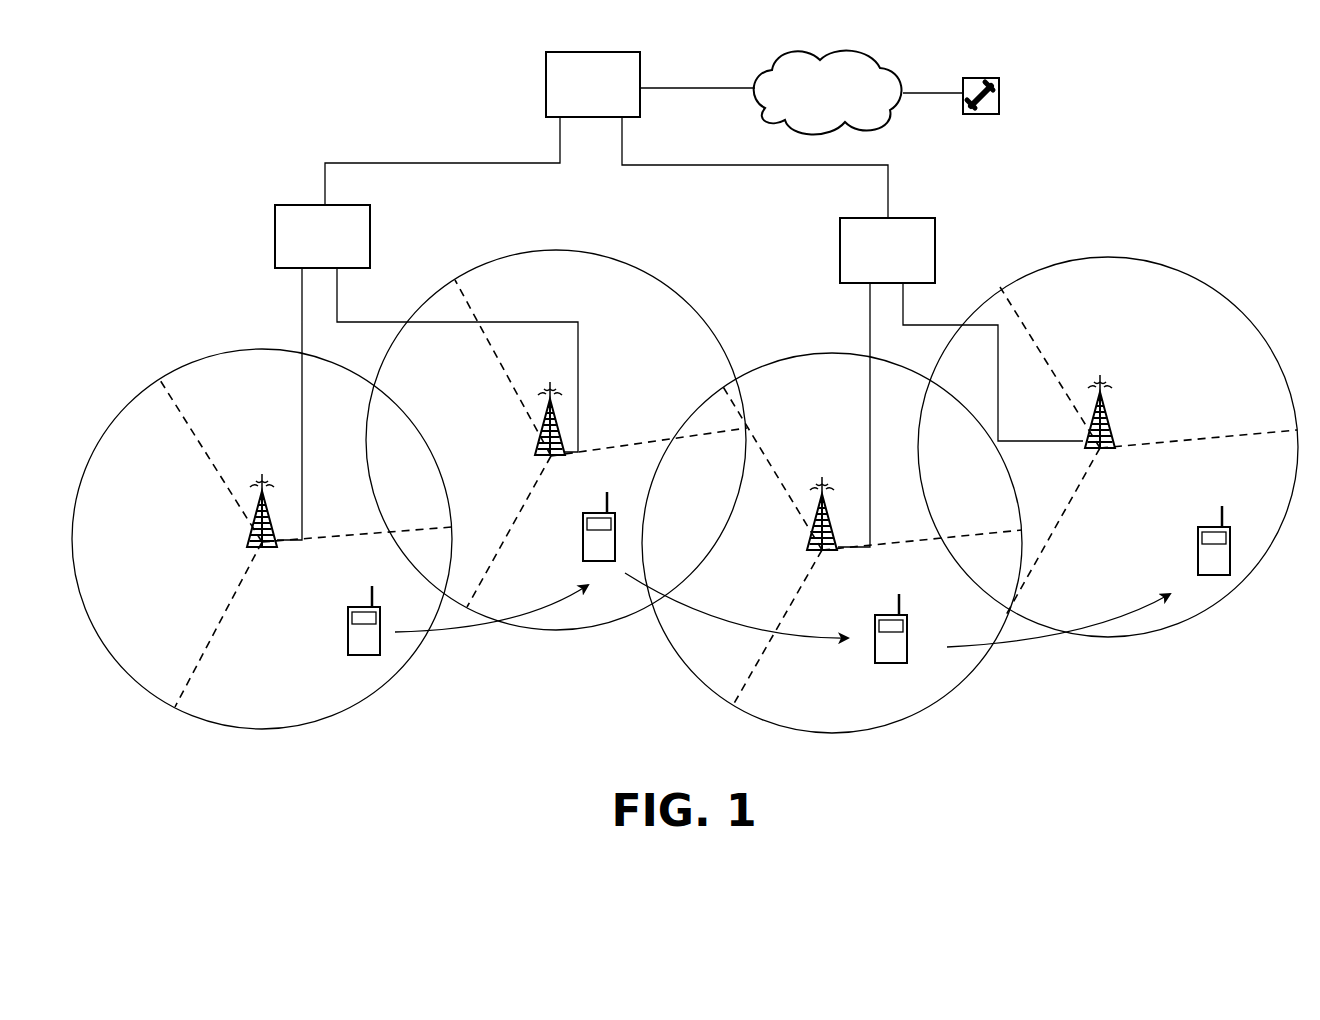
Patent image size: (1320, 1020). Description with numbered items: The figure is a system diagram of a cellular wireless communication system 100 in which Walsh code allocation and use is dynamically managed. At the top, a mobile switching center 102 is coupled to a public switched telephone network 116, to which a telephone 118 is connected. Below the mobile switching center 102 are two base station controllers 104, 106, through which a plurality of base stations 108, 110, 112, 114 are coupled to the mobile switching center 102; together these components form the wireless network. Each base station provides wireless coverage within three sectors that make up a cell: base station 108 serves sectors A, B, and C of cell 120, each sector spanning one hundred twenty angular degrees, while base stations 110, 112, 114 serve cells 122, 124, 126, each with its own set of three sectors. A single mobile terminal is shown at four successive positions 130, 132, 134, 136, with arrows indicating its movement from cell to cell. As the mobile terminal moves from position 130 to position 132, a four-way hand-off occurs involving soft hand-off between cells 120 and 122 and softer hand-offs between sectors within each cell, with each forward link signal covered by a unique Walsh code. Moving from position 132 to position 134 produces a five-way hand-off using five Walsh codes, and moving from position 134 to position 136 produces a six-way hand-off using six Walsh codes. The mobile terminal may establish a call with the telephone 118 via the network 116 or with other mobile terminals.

The cellular wireless communication system 100 is at (1022, 765).
The mobile switching center 102 is at (605, 52).
The base station controller 104 is at (344, 205).
The base station controller 106 is at (908, 218).
The base station 108 is at (246, 546).
The base station 110 is at (542, 458).
The base station 112 is at (808, 554).
The base station 114 is at (1114, 448).
The public switched telephone network 116 is at (887, 71).
The telephone 118 is at (1000, 94).
The cell 120 is at (181, 367).
The cell 122 is at (541, 252).
The cell 124 is at (830, 352).
The cell 126 is at (1109, 257).
The mobile terminal position 130 is at (346, 629).
The mobile terminal position 132 is at (583, 555).
The mobile terminal position 134 is at (875, 655).
The mobile terminal position 136 is at (1197, 551).